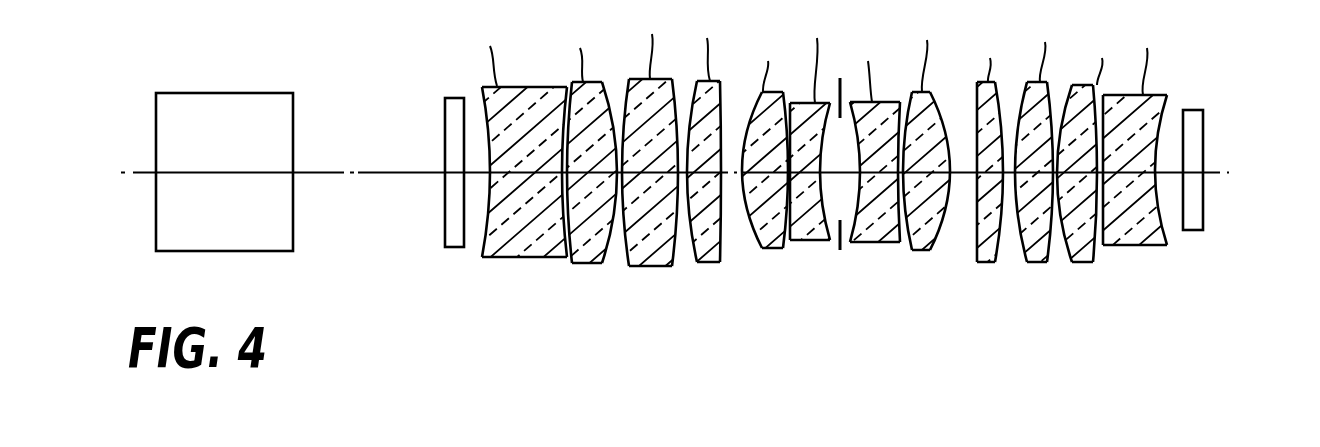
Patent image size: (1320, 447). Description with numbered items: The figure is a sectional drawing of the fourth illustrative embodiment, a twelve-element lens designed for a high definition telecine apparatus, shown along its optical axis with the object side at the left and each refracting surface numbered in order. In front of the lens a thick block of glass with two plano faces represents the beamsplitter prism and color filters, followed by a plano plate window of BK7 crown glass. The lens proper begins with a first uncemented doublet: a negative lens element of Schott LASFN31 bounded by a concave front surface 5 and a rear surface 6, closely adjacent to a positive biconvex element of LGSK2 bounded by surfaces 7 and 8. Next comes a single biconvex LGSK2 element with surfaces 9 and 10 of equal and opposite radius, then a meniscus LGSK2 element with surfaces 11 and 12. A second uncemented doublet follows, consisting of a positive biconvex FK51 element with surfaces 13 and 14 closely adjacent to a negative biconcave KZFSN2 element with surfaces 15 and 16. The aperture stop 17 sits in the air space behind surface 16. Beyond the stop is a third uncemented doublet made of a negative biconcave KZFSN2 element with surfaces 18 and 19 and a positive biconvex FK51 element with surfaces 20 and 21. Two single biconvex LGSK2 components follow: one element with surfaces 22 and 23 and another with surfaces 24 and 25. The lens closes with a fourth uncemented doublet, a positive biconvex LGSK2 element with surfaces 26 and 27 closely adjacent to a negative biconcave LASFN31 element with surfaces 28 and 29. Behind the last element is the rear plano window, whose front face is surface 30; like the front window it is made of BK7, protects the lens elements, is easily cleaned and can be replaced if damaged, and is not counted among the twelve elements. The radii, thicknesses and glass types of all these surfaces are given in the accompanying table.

The object-side surface of lens element E1d 5 is at (482, 234).
The image-side surface of lens element E1d 6 is at (553, 243).
The object-side surface of lens element E2d 7 is at (580, 257).
The image-side surface of lens element E2d 8 is at (606, 248).
The object-side surface of lens element E3d 9 is at (625, 253).
The image-side surface of lens element E3d 10 is at (677, 250).
The object-side surface of lens element E4d 11 is at (697, 257).
The image-side surface of lens element E4d 12 is at (720, 257).
The object-side surface of lens element E5d 13 is at (755, 248).
The image-side surface of lens element E5d 14 is at (788, 250).
The object-side surface of lens element E6d 15 is at (795, 240).
The image-side surface of lens element E6d 16 is at (828, 242).
The aperture stop 17 is at (840, 250).
The object-side surface of lens element E7d 18 is at (857, 242).
The image-side surface of lens element E7d 19 is at (896, 243).
The object-side surface of lens element E8d 20 is at (917, 250).
The image-side surface of lens element E8d 21 is at (935, 250).
The object-side surface of lens element E9d 22 is at (998, 248).
The image-side surface of lens element E9d 23 is at (1026, 246).
The object-side surface of lens element E10d 24 is at (1053, 246).
The image-side surface of lens element E10d 25 is at (1052, 104).
The object-side surface of lens element E11d 26 is at (1073, 250).
The image-side surface of lens element E11d 27 is at (1097, 250).
The object-side surface of lens element E12d 28 is at (1106, 222).
The image-side surface of lens element E12d 29 is at (1170, 225).
The rear plano plate window surface 30 is at (1187, 193).